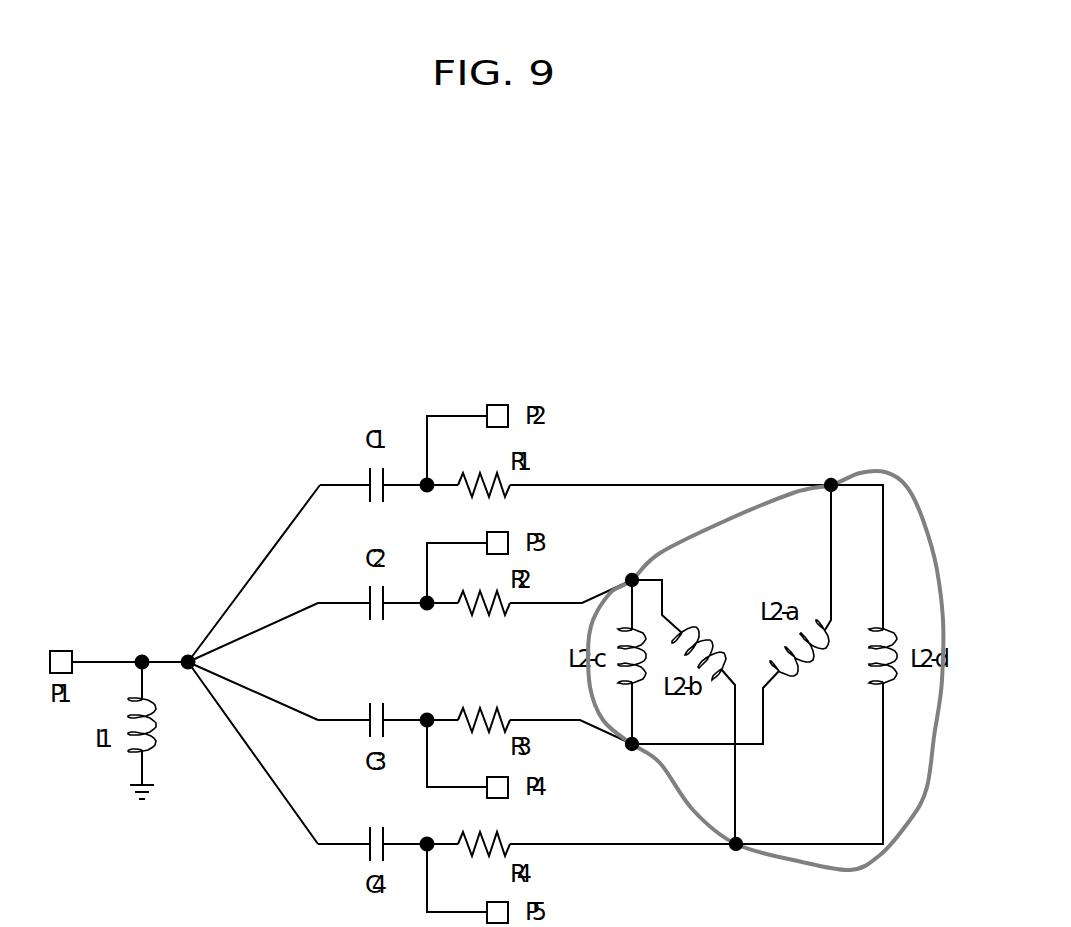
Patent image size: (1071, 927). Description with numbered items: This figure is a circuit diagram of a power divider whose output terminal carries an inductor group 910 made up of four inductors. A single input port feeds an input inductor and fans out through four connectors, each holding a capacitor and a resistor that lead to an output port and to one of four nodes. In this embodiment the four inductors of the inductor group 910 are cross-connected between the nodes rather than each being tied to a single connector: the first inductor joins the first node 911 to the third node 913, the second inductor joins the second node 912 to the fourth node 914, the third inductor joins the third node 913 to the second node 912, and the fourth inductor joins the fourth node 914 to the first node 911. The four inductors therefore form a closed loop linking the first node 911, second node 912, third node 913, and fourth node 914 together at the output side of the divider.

The inductor group 910 is at (884, 472).
The first node 911 is at (831, 485).
The second node 912 is at (632, 580).
The third node 913 is at (632, 744).
The fourth node 914 is at (736, 844).